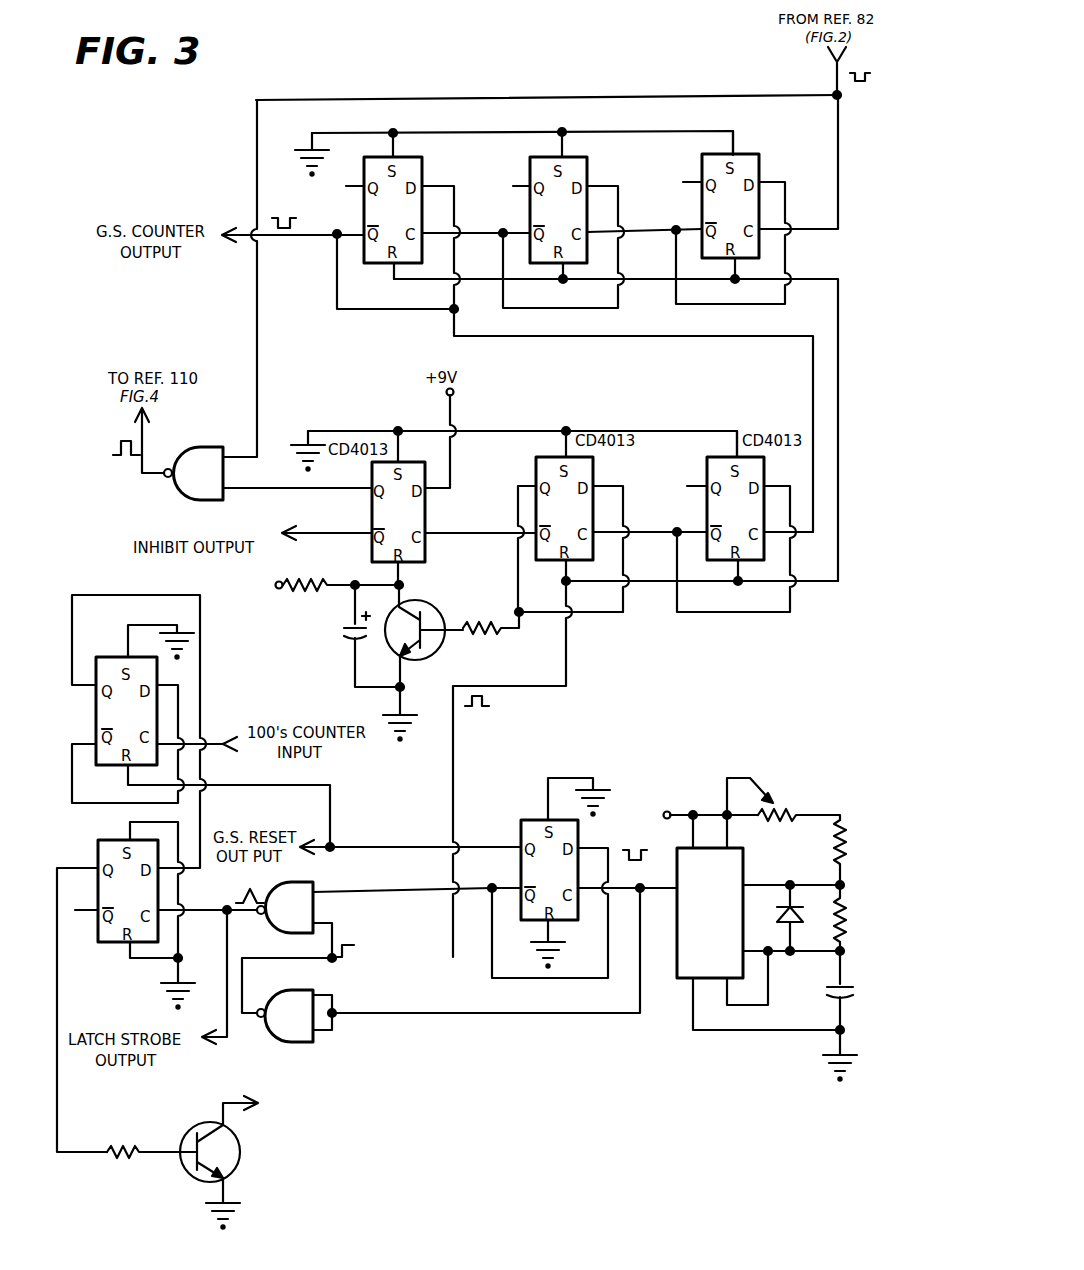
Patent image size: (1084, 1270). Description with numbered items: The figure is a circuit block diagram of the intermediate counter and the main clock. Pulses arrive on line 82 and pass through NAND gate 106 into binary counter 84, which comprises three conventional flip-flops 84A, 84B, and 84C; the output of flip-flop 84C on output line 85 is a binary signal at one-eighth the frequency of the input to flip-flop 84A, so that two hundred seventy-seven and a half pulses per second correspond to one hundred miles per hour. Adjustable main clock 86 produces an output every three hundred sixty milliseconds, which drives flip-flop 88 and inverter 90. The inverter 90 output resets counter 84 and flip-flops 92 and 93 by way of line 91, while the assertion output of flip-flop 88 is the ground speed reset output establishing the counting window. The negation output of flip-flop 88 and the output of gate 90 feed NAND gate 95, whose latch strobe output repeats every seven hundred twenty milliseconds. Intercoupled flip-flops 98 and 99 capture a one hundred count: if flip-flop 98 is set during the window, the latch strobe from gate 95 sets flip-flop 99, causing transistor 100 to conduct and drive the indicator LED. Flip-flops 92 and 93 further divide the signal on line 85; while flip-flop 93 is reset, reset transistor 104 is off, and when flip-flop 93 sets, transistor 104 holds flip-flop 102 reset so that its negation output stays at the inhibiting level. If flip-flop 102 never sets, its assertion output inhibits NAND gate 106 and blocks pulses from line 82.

The line 82 is at (835, 84).
The binary counter 84 is at (609, 130).
The flip-flop 84A is at (751, 212).
The flip-flop 84B is at (581, 216).
The flip-flop 84C is at (416, 216).
The output line 85 is at (290, 238).
The main clock 86 is at (736, 937).
The flip-flop 88 is at (570, 874).
The inverter 90 is at (308, 1025).
The line 91 is at (567, 668).
The flip-flop 92 is at (758, 511).
The flip-flop 93 is at (584, 511).
The NAND gate 95 is at (308, 921).
The flip-flop 98 is at (145, 718).
The flip-flop 99 is at (147, 889).
The transistor 100 is at (200, 1133).
The flip-flop 102 is at (418, 511).
The reset transistor 104 is at (422, 607).
The NAND gate 106 is at (217, 486).